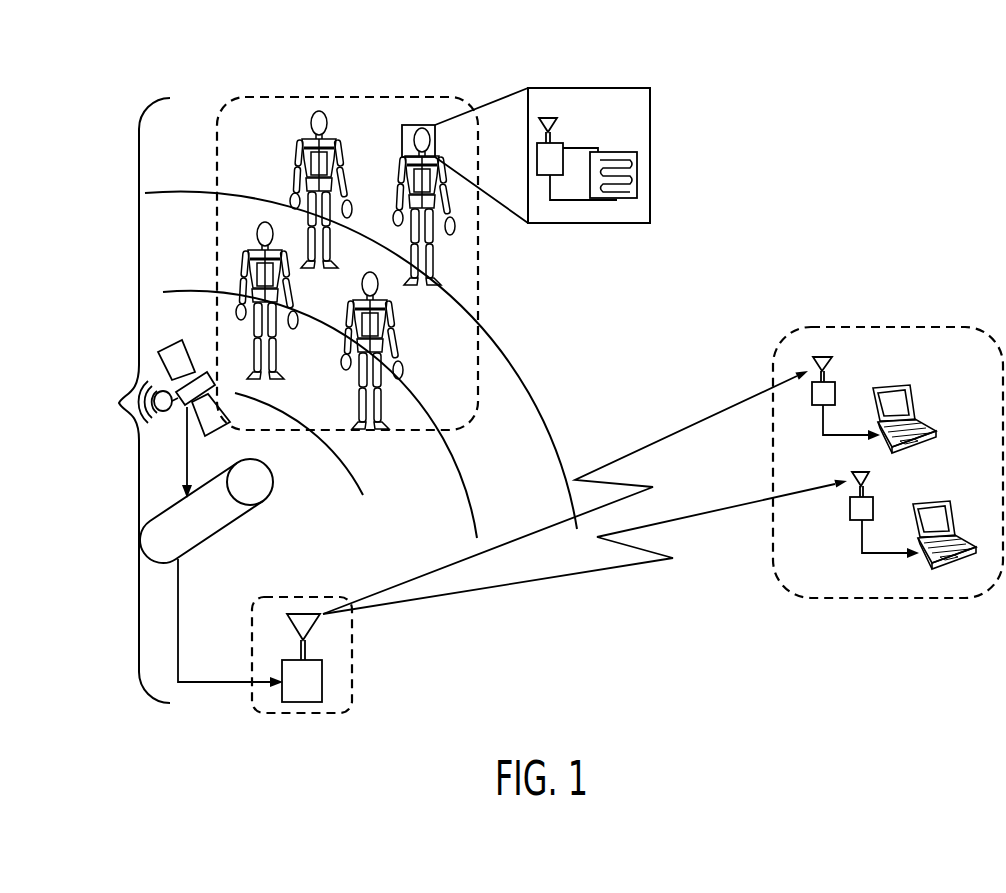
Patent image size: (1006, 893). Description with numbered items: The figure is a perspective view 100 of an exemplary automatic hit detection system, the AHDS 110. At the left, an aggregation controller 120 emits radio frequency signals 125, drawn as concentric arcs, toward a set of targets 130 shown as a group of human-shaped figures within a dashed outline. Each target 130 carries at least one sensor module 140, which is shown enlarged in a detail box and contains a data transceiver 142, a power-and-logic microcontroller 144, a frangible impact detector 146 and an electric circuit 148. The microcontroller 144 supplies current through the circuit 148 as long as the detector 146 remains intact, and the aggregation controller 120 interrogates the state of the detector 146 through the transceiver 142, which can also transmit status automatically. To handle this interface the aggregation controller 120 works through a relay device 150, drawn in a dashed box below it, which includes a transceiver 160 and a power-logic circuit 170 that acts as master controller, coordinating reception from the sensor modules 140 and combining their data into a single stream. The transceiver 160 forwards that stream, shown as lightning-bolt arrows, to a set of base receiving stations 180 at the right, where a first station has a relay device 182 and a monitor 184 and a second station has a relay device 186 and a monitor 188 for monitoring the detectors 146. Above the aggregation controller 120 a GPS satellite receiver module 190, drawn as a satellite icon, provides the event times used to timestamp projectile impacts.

The perspective view 100 is at (863, 120).
The AHDS 110 is at (119, 403).
The aggregation controller 120 is at (250, 505).
The radio frequency signals 125 is at (535, 400).
The targets 130 is at (351, 96).
The sensor module 140 is at (553, 224).
The data transceiver 142 is at (556, 124).
The power-and-logic microcontroller 144 is at (565, 181).
The frangible impact detector 146 is at (640, 160).
The electric circuit 148 is at (626, 203).
The relay device 150 is at (353, 645).
The relay transceiver 160 is at (293, 627).
The power-logic circuit 170 is at (322, 682).
The base receiving stations 180 is at (974, 365).
The relay device 182 is at (822, 356).
The monitor 184 is at (916, 400).
The relay device 186 is at (848, 505).
The monitor 188 is at (936, 504).
The GPS satellite receiver module 190 is at (186, 355).